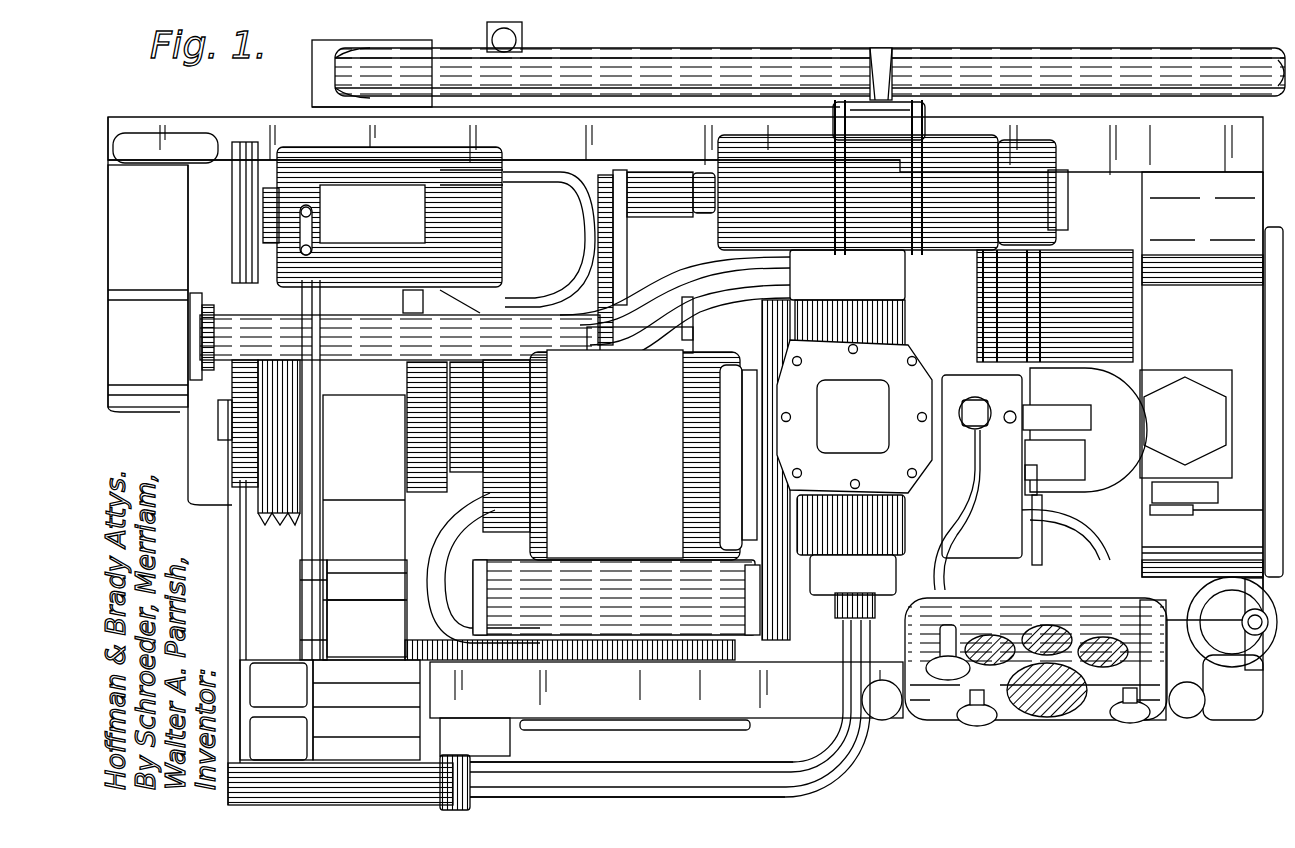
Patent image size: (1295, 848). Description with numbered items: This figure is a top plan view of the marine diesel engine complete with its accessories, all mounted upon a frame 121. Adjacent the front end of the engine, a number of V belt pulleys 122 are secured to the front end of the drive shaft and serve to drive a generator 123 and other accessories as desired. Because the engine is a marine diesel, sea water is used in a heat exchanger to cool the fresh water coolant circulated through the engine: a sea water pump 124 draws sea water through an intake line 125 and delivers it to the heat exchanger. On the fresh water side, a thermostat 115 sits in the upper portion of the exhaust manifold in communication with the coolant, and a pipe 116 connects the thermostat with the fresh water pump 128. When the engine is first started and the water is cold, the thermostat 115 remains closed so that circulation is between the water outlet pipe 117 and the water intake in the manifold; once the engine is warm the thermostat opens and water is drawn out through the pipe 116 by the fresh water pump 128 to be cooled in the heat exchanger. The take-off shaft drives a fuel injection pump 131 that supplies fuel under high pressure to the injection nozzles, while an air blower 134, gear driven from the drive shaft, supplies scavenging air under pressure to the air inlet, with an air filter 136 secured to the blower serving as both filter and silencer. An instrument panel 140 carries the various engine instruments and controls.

The thermostat 115 is at (838, 615).
The pipe 116 is at (858, 655).
The water outlet pipe 117 is at (886, 288).
The frame 121 is at (695, 461).
The V belt pulleys 122 is at (278, 520).
The generator 123 is at (302, 157).
The sea water pump 124 is at (392, 26).
The intake line 125 is at (1062, 62).
The fresh water pump 128 is at (585, 766).
The fuel injection pump 131 is at (1072, 393).
The air blower 134 is at (596, 460).
The air filter 136 is at (611, 610).
The instrument panel 140 is at (1090, 712).